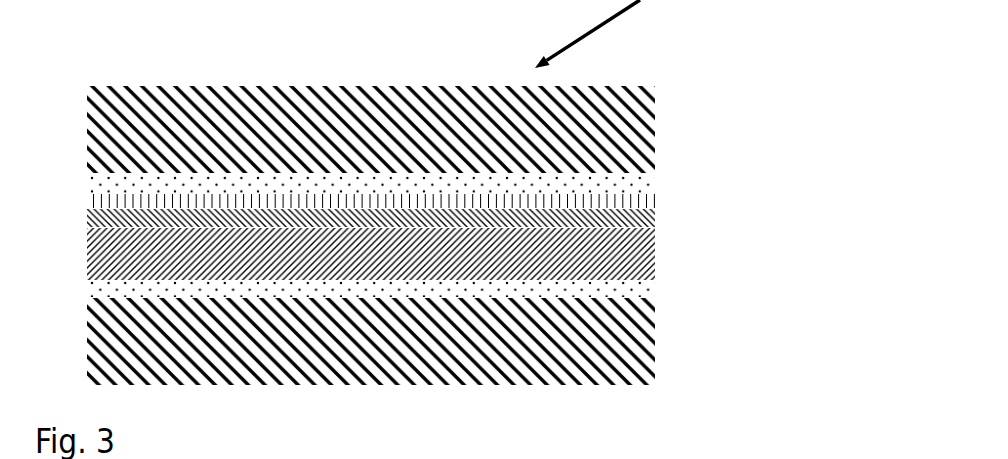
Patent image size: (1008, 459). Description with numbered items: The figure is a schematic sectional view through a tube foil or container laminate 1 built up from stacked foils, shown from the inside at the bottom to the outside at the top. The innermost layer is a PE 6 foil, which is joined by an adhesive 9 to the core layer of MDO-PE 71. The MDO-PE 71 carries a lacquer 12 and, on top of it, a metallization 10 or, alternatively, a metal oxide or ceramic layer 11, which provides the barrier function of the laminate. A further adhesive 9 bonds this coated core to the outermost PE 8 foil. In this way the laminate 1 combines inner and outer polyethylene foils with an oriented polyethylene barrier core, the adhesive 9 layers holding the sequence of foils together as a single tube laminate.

The container laminate 1 is at (600, 457).
The PE 6 is at (607, 345).
The PE 8 is at (595, 125).
The adhesive 9 is at (620, 180).
The metallization 10 is at (474, 188).
The metal oxide or ceramic layer 11 is at (627, 198).
The lacquer 12 is at (627, 215).
The MDO-PE 71 is at (620, 255).